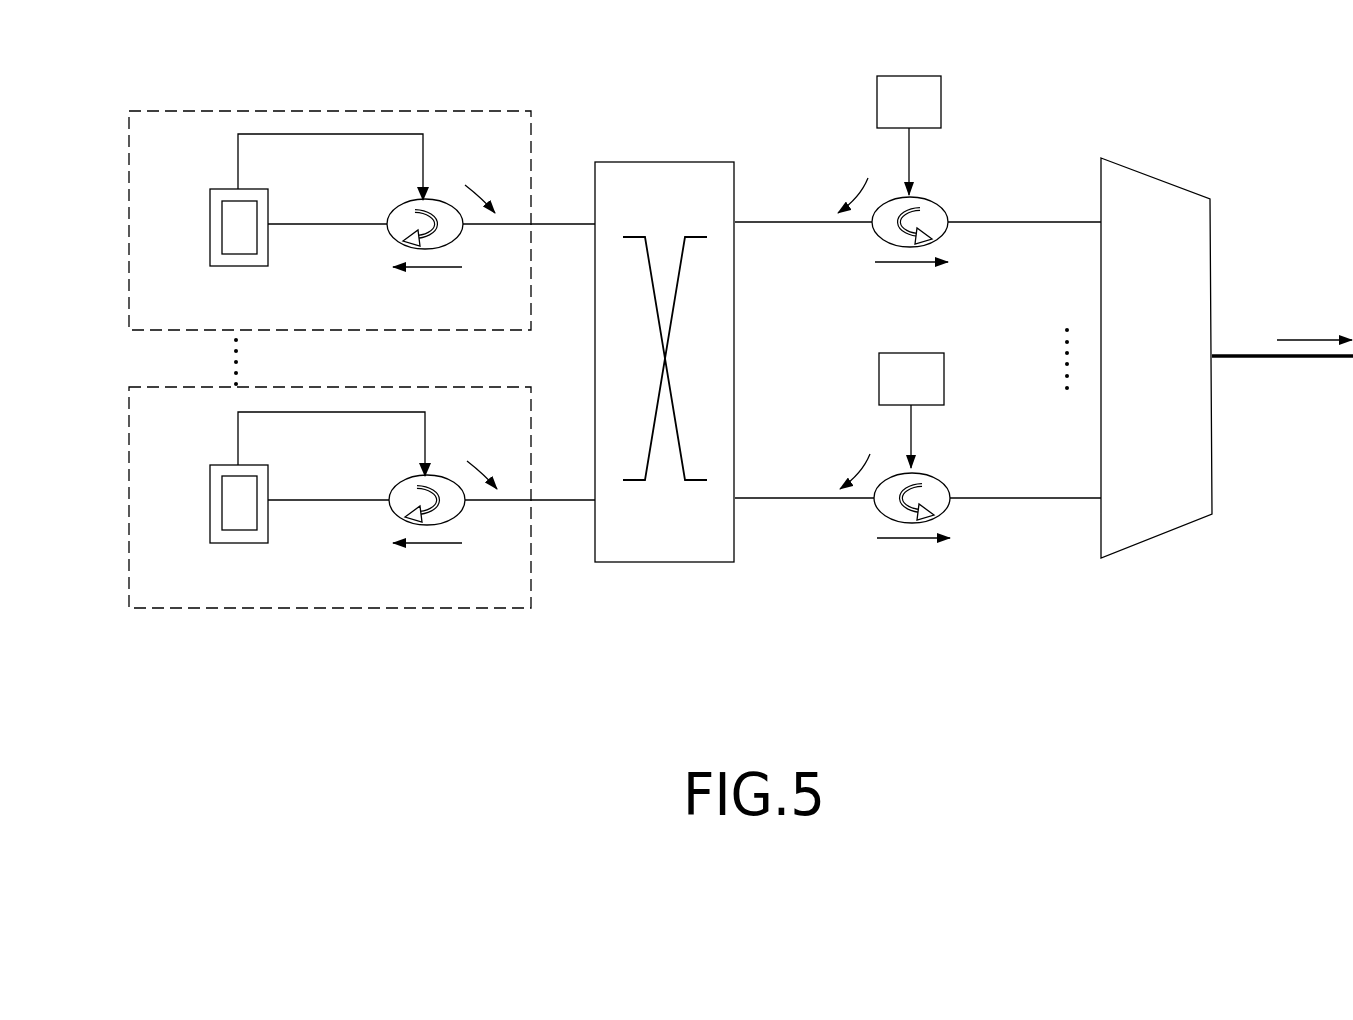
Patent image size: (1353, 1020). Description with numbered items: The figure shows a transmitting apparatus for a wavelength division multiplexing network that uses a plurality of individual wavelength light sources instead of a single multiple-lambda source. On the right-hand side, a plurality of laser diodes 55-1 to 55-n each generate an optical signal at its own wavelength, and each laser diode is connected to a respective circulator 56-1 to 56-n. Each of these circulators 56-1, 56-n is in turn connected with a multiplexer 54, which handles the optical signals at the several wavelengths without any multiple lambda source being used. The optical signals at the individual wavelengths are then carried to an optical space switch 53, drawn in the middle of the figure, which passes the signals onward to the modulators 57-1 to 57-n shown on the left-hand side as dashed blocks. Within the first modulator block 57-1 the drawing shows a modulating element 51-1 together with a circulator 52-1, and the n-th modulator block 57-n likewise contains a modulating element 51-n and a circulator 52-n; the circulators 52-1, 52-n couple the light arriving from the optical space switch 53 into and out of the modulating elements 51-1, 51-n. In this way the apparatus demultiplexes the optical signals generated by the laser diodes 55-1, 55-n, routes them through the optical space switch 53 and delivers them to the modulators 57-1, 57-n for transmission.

The modulator 57-1 is at (129, 222).
The modulator 57-n is at (129, 497).
The first modulator 51-1 is at (239, 266).
The n-th modulator 51-n is at (239, 543).
The first optical circulator 52-1 is at (392, 210).
The n-th optical circulator 52-n is at (394, 486).
The optical space switch 53 is at (595, 361).
The multiplexer 54 is at (1155, 178).
The laser diode 55-1 is at (875, 102).
The laser diode 55-n is at (876, 378).
The circulator 56-1 is at (944, 206).
The circulator 56-n is at (944, 482).